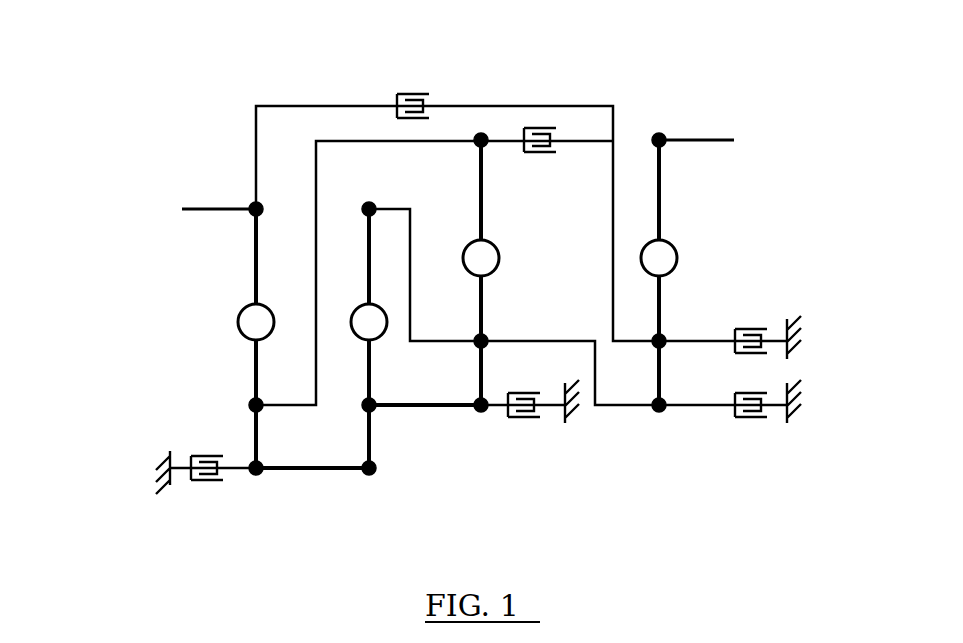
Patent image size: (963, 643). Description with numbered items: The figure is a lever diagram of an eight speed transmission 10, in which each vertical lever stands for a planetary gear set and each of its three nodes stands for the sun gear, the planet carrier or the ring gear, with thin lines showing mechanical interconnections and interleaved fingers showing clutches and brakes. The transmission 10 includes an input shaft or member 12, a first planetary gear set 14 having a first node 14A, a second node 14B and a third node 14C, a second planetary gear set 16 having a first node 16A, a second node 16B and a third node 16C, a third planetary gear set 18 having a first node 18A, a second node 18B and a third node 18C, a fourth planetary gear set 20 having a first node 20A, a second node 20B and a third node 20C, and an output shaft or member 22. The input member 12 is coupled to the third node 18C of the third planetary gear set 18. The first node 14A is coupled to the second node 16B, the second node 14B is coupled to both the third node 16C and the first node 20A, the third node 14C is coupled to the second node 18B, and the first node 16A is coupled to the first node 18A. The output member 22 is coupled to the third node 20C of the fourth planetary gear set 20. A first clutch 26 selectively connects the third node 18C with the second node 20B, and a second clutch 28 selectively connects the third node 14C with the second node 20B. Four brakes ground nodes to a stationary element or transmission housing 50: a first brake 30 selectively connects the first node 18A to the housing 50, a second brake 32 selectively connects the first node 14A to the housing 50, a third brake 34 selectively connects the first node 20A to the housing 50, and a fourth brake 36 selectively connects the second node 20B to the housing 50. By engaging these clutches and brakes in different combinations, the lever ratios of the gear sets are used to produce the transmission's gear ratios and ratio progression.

The eight speed transmission 10 is at (705, 64).
The input shaft or member 12 is at (208, 245).
The first planetary gear set 14 is at (497, 293).
The first node of the first planetary gear set 14A is at (480, 413).
The second node of the first planetary gear set 14B is at (485, 337).
The third node of the first planetary gear set 14C is at (482, 133).
The second planetary gear set 16 is at (412, 348).
The first node of the second planetary gear set 16A is at (367, 476).
The second node of the second planetary gear set 16B is at (373, 400).
The third node of the second planetary gear set 16C is at (371, 202).
The third planetary gear set 18 is at (264, 354).
The first node of the third planetary gear set 18A is at (258, 476).
The second node of the third planetary gear set 18B is at (250, 403).
The third node of the third planetary gear set 18C is at (250, 202).
The fourth planetary gear set 20 is at (677, 298).
The first node of the fourth planetary gear set 20A is at (658, 413).
The second node of the fourth planetary gear set 20B is at (663, 337).
The third node of the fourth planetary gear set 20C is at (660, 133).
The output shaft or member 22 is at (722, 177).
The first clutch 26 is at (410, 93).
The second clutch 28 is at (543, 154).
The first brake 30 is at (205, 485).
The second brake 32 is at (524, 420).
The third brake 34 is at (749, 420).
The fourth brake 36 is at (755, 327).
The stationary element or transmission housing 50 is at (160, 454).